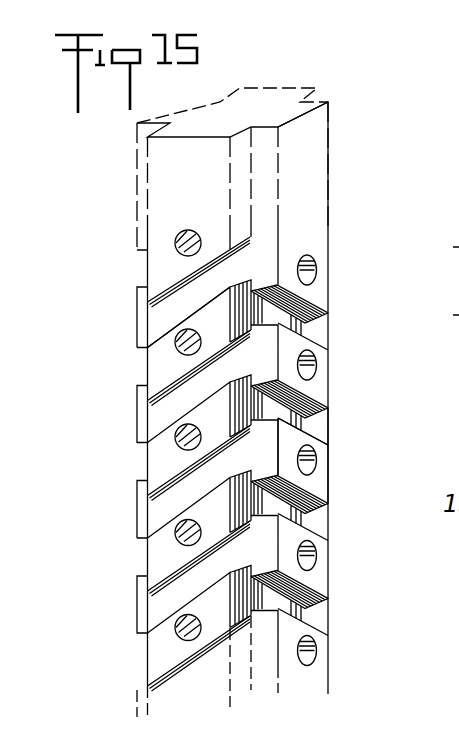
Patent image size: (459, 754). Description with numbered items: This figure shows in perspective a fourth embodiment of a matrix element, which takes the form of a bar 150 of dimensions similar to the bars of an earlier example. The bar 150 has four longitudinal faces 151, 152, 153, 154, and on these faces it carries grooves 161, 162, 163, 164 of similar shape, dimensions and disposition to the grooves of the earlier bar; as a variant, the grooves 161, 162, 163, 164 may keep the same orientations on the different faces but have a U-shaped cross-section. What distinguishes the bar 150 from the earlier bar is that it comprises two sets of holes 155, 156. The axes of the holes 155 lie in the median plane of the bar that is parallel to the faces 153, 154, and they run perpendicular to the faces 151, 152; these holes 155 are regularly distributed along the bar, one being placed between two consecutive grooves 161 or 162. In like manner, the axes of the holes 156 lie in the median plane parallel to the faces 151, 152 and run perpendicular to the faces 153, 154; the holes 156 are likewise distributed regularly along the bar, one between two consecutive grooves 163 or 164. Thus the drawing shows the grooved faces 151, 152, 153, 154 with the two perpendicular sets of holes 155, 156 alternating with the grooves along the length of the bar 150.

The bar 150 is at (126, 442).
The face 151 is at (165, 367).
The face 152 is at (307, 247).
The face 153 is at (317, 488).
The face 154 is at (156, 513).
The holes 155 is at (175, 250).
The holes 156 is at (315, 278).
The groove 161 is at (175, 318).
The groove 162 is at (313, 427).
The groove 163 is at (307, 330).
The groove 164 is at (150, 560).